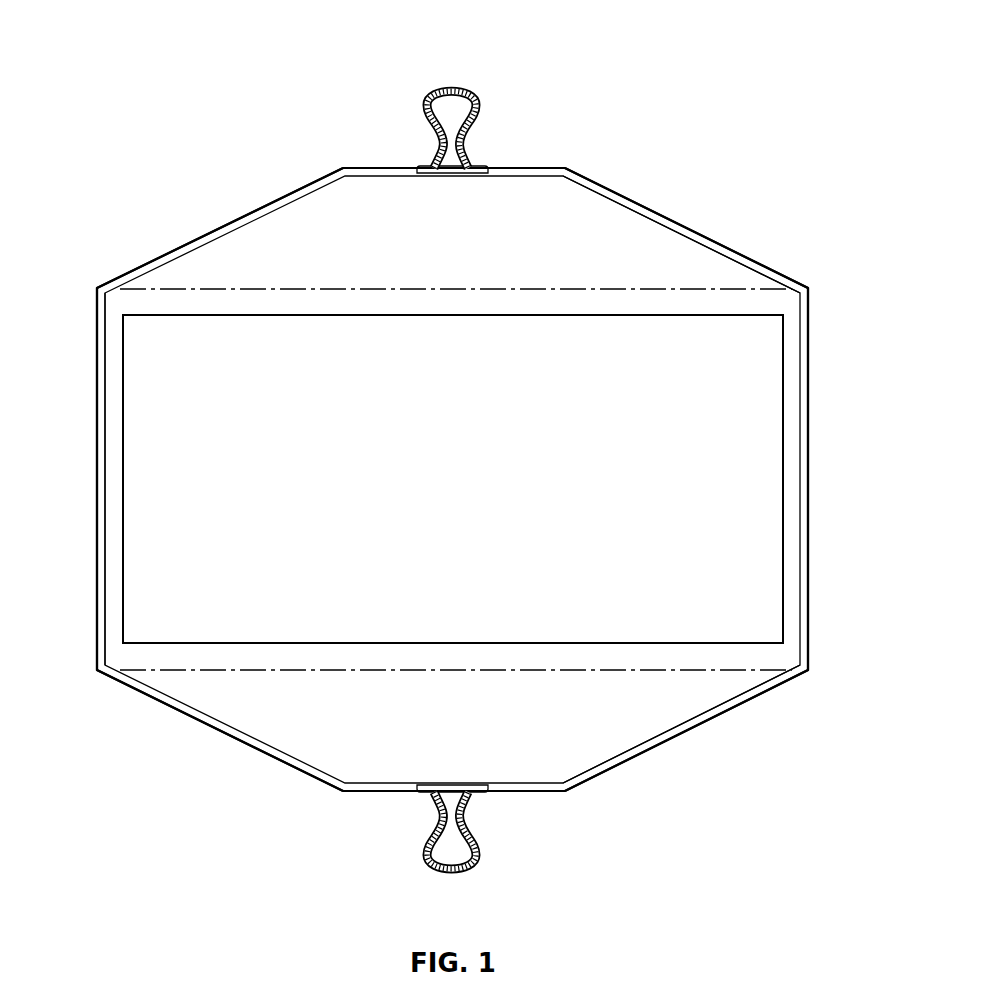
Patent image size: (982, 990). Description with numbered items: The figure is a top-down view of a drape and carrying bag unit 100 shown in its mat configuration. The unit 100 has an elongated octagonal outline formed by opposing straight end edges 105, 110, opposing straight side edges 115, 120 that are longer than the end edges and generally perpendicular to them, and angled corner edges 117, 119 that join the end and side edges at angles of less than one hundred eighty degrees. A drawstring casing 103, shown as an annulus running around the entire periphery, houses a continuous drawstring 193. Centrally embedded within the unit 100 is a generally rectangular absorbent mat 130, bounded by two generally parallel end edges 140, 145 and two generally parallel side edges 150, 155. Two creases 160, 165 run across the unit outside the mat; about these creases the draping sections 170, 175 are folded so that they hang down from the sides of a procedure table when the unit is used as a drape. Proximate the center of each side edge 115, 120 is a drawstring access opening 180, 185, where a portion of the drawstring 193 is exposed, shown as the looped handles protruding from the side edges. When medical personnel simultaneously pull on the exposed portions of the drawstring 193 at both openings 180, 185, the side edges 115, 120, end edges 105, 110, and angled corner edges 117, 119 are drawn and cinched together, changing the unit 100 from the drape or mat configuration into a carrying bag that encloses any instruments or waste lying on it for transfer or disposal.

The drape and carrying bag unit 100 is at (181, 54).
The drawstring casing 103 is at (103, 349).
The straight end edge 105 is at (97, 455).
The straight end edge 110 is at (808, 503).
The straight side edge 115 is at (400, 167).
The angled corner edge 117 is at (223, 227).
The angled corner edge 119 is at (257, 752).
The straight side edge 120 is at (383, 793).
The absorbent mat 130 is at (762, 443).
The end edge of absorbent mat 140 is at (120, 593).
The end edge of absorbent mat 145 is at (783, 625).
The side edge of absorbent mat 150 is at (715, 315).
The side edge of absorbent mat 155 is at (730, 647).
The crease 160 is at (158, 290).
The crease 165 is at (158, 670).
The draping section 170 is at (588, 207).
The draping section 175 is at (583, 750).
The drawstring access opening 180 is at (453, 175).
The drawstring access opening 185 is at (450, 787).
The drawstring 193 is at (481, 104).